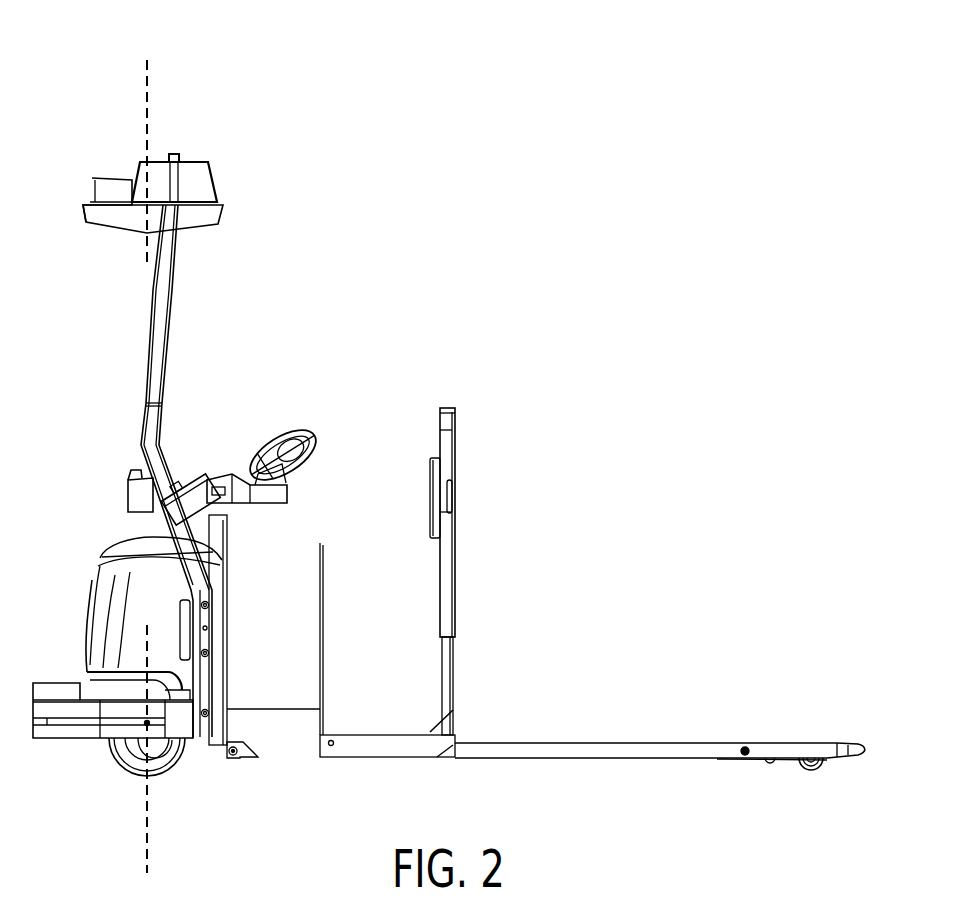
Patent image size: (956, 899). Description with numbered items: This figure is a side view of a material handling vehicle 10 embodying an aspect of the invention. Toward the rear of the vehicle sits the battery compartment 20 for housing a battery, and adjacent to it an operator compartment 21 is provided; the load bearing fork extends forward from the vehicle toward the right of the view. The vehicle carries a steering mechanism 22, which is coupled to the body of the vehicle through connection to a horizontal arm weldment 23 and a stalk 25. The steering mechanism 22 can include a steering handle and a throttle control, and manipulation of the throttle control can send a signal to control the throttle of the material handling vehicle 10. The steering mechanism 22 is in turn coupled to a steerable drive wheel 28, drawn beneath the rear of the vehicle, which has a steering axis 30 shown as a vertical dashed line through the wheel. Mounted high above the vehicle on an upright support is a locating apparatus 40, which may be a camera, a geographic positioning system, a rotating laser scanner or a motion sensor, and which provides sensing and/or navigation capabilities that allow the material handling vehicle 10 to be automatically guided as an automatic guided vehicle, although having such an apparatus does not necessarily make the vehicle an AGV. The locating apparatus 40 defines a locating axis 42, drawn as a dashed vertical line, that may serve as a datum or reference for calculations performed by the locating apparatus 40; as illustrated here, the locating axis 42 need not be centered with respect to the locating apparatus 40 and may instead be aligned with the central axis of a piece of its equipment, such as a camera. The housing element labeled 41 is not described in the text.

The material handling vehicle 10 is at (462, 245).
The battery compartment 20 is at (258, 678).
The operator compartment 21 is at (362, 693).
The steering mechanism 22 is at (299, 424).
The horizontal arm weldment 23 is at (262, 505).
The stalk 25 is at (223, 535).
The steerable drive wheel 28 is at (120, 755).
The steering axis 30 is at (147, 858).
The locating apparatus 40 is at (179, 409).
The sensor housing 41 is at (200, 180).
The locating axis 42 is at (149, 78).